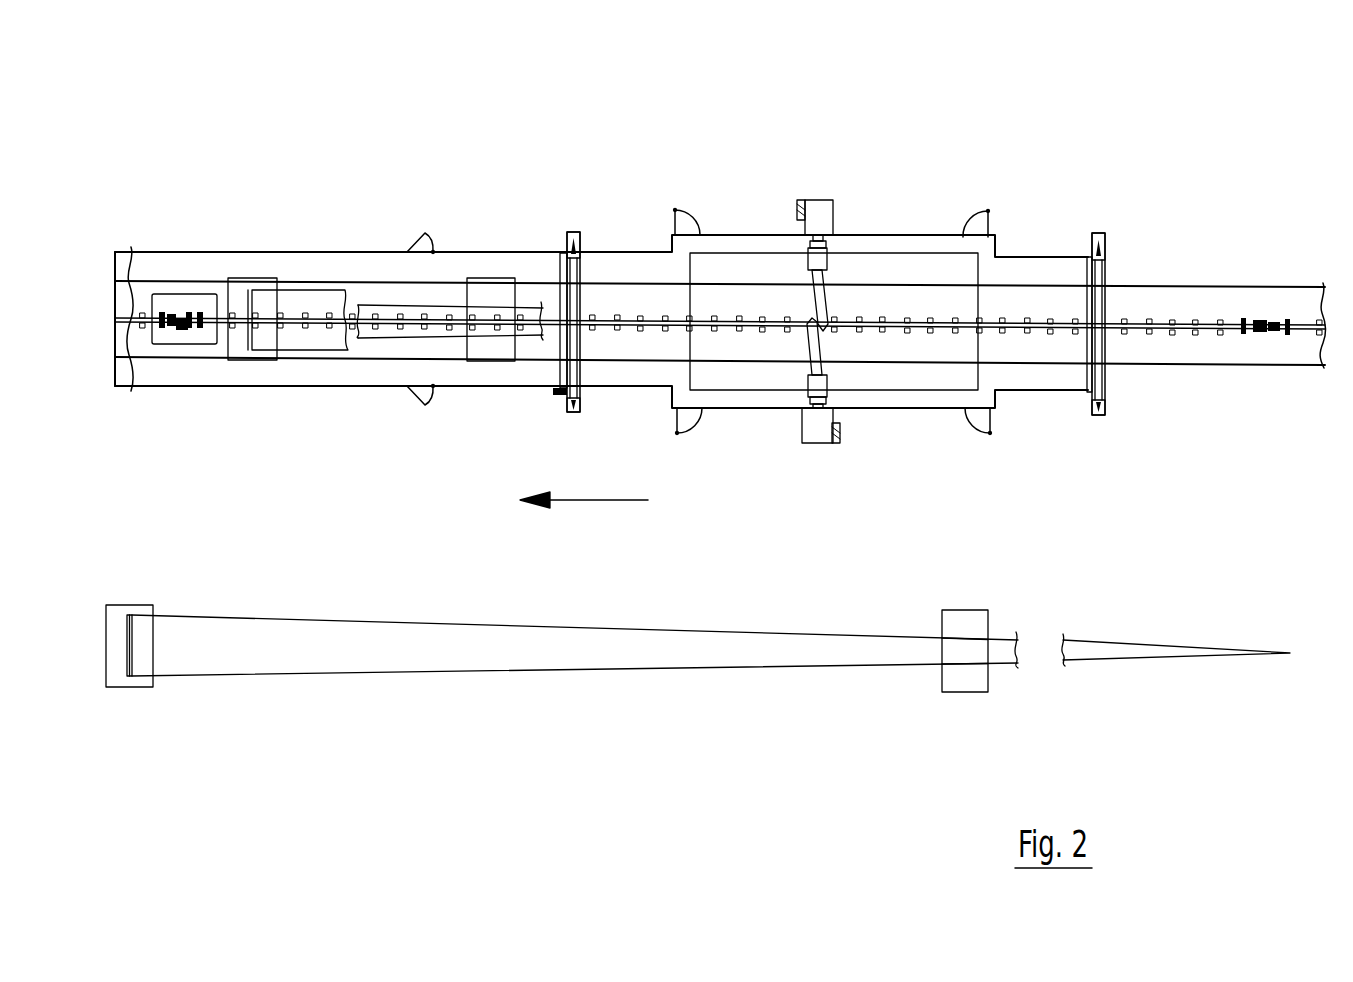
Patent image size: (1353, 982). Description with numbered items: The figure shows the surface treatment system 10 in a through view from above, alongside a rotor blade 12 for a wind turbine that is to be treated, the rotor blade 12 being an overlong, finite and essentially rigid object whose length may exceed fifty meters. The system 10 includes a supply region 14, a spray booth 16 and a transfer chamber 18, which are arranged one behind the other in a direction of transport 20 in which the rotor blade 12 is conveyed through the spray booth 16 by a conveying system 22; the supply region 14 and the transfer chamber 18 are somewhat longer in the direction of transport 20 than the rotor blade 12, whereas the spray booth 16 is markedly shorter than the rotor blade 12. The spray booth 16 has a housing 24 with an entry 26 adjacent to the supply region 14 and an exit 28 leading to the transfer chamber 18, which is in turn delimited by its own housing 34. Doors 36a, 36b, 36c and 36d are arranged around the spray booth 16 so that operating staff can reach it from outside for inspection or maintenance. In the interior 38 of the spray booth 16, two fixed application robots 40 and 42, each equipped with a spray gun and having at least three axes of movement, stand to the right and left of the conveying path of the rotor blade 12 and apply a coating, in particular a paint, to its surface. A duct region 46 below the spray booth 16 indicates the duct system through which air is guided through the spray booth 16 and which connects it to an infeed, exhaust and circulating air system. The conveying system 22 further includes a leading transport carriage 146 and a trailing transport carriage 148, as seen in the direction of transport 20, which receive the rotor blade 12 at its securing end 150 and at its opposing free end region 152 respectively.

The surface treatment system 10 is at (1058, 99).
The rotor blade 12 is at (312, 333).
The supply region 14 is at (1243, 229).
The spray booth 16 is at (915, 188).
The transfer chamber 18 is at (377, 195).
The direction of transport 20 is at (588, 500).
The conveying system 22 is at (1184, 346).
The housing 24 is at (753, 235).
The entry 26 is at (1047, 257).
The exit 28 is at (590, 262).
The housing 34 is at (207, 252).
The door 36a is at (692, 415).
The door 36b is at (972, 425).
The door 36c is at (688, 222).
The door 36d is at (968, 228).
The interior 38 is at (920, 276).
The application robot 40 is at (810, 388).
The application robot 42 is at (824, 258).
The duct region 46 is at (882, 393).
The leading transport carriage 146 is at (119, 600).
The trailing transport carriage 148 is at (972, 609).
The securing end 150 is at (143, 650).
The free end region 152 is at (967, 650).